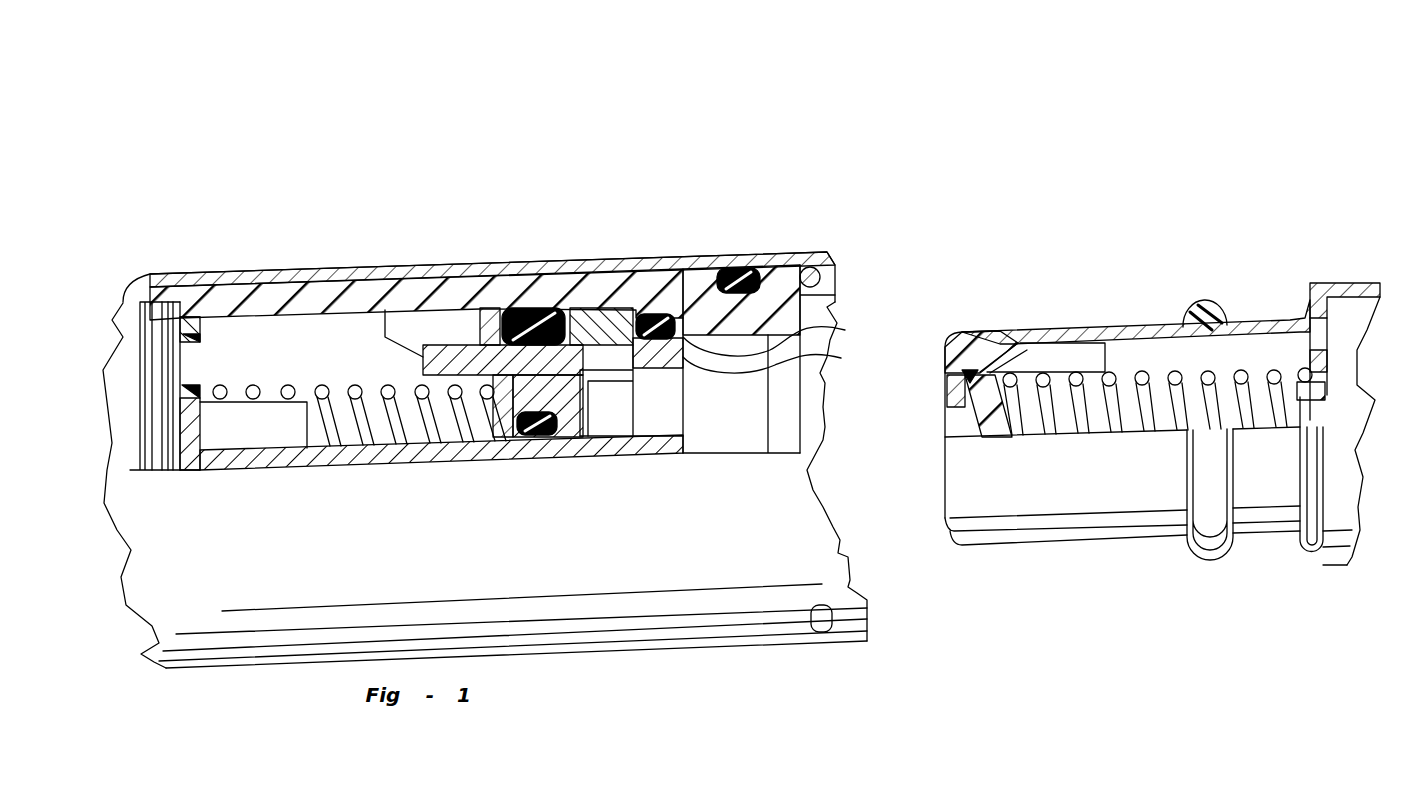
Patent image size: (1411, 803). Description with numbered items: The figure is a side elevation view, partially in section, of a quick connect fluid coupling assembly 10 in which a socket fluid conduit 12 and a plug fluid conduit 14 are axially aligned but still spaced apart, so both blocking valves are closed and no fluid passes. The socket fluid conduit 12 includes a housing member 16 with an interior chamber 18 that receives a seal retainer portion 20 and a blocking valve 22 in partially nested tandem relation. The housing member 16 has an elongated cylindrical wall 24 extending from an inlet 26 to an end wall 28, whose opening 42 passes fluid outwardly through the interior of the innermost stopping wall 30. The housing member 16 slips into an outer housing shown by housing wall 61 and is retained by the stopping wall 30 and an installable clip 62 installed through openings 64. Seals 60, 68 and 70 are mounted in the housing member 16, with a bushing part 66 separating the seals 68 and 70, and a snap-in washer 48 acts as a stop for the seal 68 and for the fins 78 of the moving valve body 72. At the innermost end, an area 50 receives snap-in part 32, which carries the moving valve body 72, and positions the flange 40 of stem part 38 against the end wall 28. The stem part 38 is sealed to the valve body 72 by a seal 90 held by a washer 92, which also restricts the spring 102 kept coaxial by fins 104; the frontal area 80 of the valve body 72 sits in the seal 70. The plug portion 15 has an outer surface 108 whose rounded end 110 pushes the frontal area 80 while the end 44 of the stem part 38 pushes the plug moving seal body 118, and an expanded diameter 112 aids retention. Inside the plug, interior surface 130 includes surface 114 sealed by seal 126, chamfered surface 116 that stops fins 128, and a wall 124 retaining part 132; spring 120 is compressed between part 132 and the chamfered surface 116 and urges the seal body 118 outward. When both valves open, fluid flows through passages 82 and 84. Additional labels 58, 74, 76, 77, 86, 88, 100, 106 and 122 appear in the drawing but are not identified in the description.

The quick connect fluid coupling assembly 10 is at (985, 98).
The socket fluid conduit 12 is at (348, 163).
The plug fluid conduit 14 is at (1145, 194).
The plug portion 15 is at (1105, 327).
The housing member 16 is at (836, 290).
The interior chamber 18 is at (836, 315).
The seal retainer portion 20 is at (706, 262).
The blocking valve 22 is at (690, 400).
The elongated cylindrical wall 24 is at (248, 302).
The inlet 26 is at (750, 430).
The end wall 28 is at (118, 478).
The housing wall innermost stopping wall 30 is at (190, 378).
The snap-in part 32 is at (180, 433).
The stem part 38 is at (202, 337).
The radially outward flange 40 is at (150, 460).
The opening 42 is at (180, 404).
The end of stem 44 is at (605, 347).
The snap-in washer 48 is at (492, 320).
The area 50 is at (124, 301).
The passage 58 is at (778, 337).
The seal 60 is at (740, 278).
The housing wall 61 is at (618, 262).
The installable clip 62 is at (808, 267).
The openings 64 is at (857, 620).
The bushing part 66 is at (605, 330).
The seal 68 is at (522, 325).
The seal 70 is at (655, 322).
The moving valve body 72 is at (465, 443).
The valve stem 74 is at (590, 440).
The washer 76 is at (425, 443).
The bushing 77 is at (182, 317).
The fins 78 is at (403, 327).
The frontal area 80 is at (777, 359).
The passage 82 is at (753, 417).
The passage 84 is at (604, 407).
The seal 86 is at (640, 378).
The wall 88 is at (803, 396).
The seal 90 is at (530, 438).
The washer 92 is at (508, 438).
The seal 100 is at (203, 370).
The spring 102 is at (322, 385).
The fins 104 is at (245, 433).
The flange 106 is at (1356, 283).
The outer surface 108 is at (1258, 322).
The end of surface 110 is at (962, 340).
The expanded diameter 112 is at (1210, 302).
The surface 114 is at (958, 380).
The chamfered surface 116 is at (1010, 360).
The plug moving seal body 118 is at (973, 433).
The spring 120 is at (1087, 425).
The spring end 122 is at (950, 440).
The wall 124 is at (1300, 312).
The seal 126 is at (977, 368).
The fins 128 is at (1070, 355).
The interior surface 130 is at (1133, 340).
The part 132 is at (1330, 380).